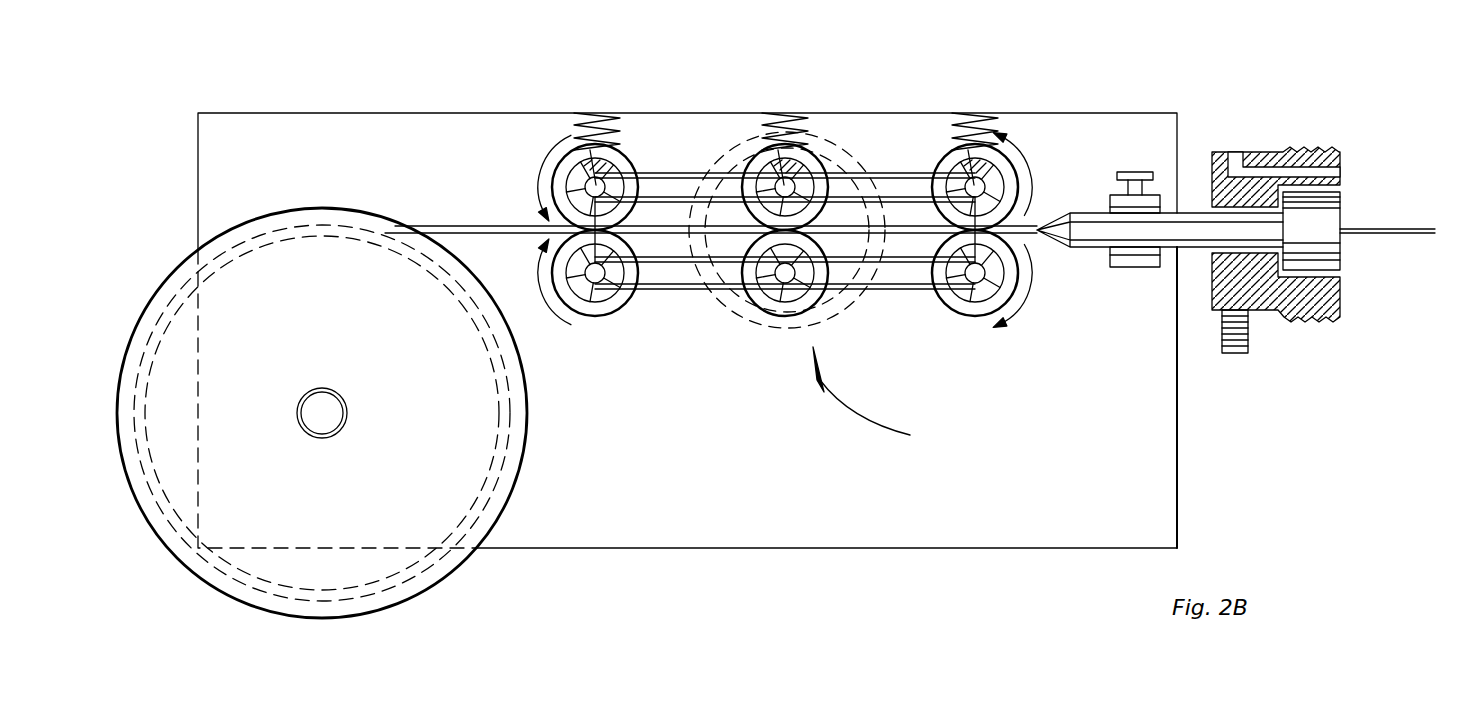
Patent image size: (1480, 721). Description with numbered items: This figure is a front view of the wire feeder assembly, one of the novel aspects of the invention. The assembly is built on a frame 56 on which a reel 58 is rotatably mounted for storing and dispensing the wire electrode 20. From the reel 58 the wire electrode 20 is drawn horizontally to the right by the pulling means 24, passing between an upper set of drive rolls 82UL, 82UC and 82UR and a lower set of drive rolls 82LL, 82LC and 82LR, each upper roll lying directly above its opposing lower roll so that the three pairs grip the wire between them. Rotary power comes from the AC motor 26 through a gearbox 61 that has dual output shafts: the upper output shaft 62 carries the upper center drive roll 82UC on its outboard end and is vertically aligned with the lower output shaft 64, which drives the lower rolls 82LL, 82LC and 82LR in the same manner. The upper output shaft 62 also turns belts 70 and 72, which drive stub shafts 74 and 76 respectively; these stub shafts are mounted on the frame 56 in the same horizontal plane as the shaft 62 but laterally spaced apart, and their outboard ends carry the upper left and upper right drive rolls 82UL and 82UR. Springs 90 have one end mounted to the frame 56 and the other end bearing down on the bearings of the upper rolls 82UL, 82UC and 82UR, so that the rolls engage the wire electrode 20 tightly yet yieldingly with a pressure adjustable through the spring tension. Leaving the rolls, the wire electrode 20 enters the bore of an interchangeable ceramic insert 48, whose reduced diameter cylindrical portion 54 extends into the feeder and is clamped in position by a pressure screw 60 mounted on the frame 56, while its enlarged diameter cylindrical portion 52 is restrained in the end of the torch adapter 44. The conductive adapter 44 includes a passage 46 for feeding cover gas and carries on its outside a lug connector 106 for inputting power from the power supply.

The wire electrode 20 is at (490, 227).
The pulling means 24 is at (875, 397).
The AC motor 26 is at (703, 163).
The torch adapter 44 is at (1289, 196).
The passage 46 is at (1237, 152).
The interchangeable insert 48 is at (1190, 213).
The enlarged diameter cylindrical portion 52 is at (1342, 183).
The reduced diameter cylindrical portion 54 is at (1175, 295).
The frame 56 is at (387, 112).
The reel 58 is at (389, 610).
The pressure screw 60 is at (1125, 172).
The gearbox 61 is at (714, 140).
The upper output shaft 62 is at (790, 154).
The lower output shaft 64 is at (787, 285).
The belt 70 is at (785, 210).
The belt 72 is at (900, 258).
The stub shaft 74 is at (585, 187).
The stub shaft 76 is at (985, 188).
The springs 90 is at (593, 113).
The lug connector 106 is at (1245, 353).
The upper left drive roll 82UL is at (548, 182).
The lower left drive roll 82LL is at (577, 307).
The upper center drive roll 82UC is at (828, 158).
The lower center drive roll 82LC is at (821, 312).
The upper right drive roll 82UR is at (961, 124).
The lower right drive roll 82LR is at (975, 316).